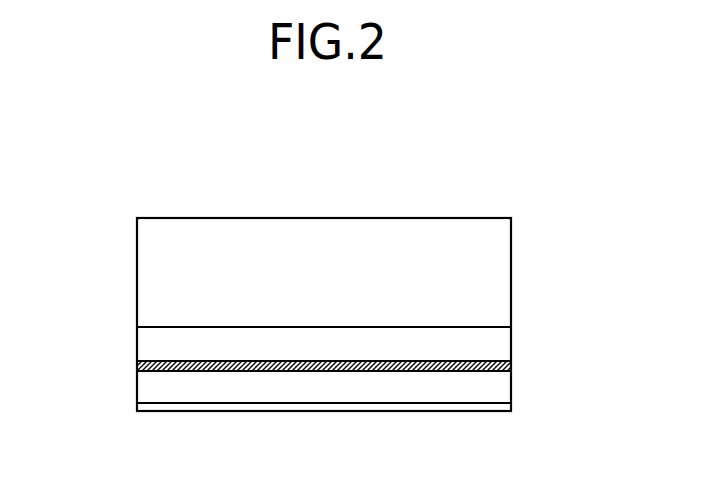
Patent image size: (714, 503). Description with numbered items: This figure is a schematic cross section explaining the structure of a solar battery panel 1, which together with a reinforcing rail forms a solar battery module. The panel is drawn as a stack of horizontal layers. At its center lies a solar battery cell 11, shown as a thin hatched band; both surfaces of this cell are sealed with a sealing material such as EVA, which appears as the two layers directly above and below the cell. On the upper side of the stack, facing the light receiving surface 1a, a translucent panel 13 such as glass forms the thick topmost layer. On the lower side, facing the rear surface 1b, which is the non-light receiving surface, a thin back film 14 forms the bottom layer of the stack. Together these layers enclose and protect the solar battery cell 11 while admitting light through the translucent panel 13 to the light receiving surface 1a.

The solar battery panel 1 is at (480, 160).
The light receiving surface 1a is at (272, 218).
The rear surface 1b is at (414, 413).
The solar battery cell 11 is at (505, 366).
The translucent panel 13 is at (146, 271).
The back film 14 is at (503, 410).